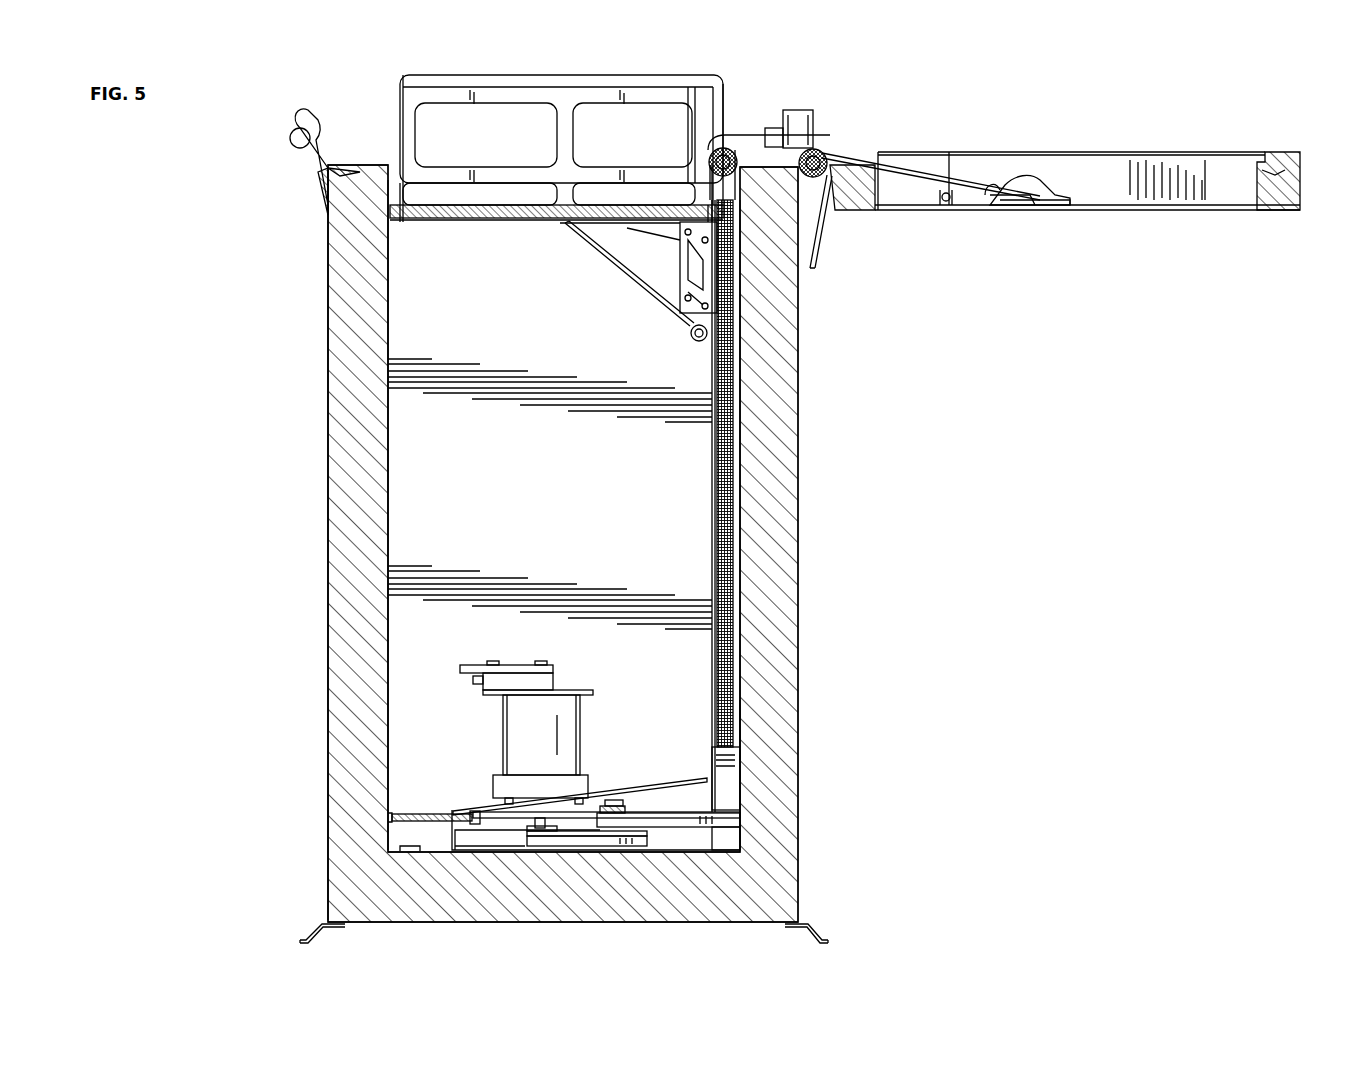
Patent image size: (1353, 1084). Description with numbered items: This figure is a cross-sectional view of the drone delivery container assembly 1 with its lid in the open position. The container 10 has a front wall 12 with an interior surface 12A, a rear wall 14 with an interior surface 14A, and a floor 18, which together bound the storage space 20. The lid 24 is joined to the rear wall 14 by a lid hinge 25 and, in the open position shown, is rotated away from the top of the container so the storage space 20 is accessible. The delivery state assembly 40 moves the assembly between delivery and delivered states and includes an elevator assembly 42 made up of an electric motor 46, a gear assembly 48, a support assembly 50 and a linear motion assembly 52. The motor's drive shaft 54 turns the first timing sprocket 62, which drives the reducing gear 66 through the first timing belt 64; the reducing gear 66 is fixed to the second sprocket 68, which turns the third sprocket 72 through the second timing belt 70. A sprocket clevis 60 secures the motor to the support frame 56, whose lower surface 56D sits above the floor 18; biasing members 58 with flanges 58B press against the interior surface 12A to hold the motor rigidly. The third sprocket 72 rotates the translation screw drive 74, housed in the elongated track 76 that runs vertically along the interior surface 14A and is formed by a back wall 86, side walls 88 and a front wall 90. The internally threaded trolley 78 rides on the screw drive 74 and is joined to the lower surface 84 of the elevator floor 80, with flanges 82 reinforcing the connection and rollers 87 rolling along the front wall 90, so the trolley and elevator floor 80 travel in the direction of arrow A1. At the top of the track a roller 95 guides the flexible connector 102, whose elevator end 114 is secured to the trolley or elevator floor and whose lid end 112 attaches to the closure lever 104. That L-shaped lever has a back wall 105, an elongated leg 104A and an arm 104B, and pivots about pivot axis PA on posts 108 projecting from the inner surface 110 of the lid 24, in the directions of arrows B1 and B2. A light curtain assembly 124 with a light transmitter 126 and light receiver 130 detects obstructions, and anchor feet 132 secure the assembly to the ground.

The drone delivery container assembly 1 is at (252, 262).
The container 10 is at (248, 312).
The front wall 12 is at (388, 503).
The interior surface of the front wall 12A is at (388, 650).
The rear wall 14 is at (798, 572).
The interior surface of the rear wall 14A is at (740, 698).
The floor 18 is at (420, 855).
The storage space 20 is at (410, 440).
The lid 24 is at (1258, 160).
The lid hinge 25 is at (813, 147).
The delivery state assembly 40 is at (1118, 118).
The elevator assembly 42 is at (448, 680).
The electric motor 46 is at (503, 732).
The gear assembly 48 is at (600, 776).
The support assembly 50 is at (415, 813).
The linear motion assembly 52 is at (684, 660).
The drive shaft 54 is at (500, 846).
The support frame 56 is at (663, 776).
The lower surface 56D is at (650, 850).
The biasing members 58 is at (400, 816).
The flange 58B is at (392, 822).
The sprocket clevis 60 is at (490, 840).
The first timing sprocket 62 is at (540, 835).
The first timing belt 64 is at (560, 840).
The reducing gear 66 is at (618, 812).
The second sprocket 68 is at (600, 847).
The second timing belt 70 is at (700, 828).
The third sprocket 72 is at (740, 808).
The translation screw drive 74 is at (733, 410).
The elongated track 76 is at (735, 445).
The trolley 78 is at (712, 291).
The elevator floor 80 is at (468, 210).
The flanges 82 is at (618, 286).
The lower surface of the elevator floor 84 is at (515, 222).
The back wall 86 is at (742, 485).
The rollers 87 is at (692, 340).
The side walls 88 is at (712, 488).
The front wall 90 is at (712, 540).
The roller 95 is at (728, 185).
The flexible connector 102 is at (840, 160).
The closure lever 104 is at (1027, 178).
The elongated leg 104A is at (1000, 192).
The arm 104B is at (949, 160).
The back wall 105 is at (1050, 205).
The posts 108 is at (946, 202).
The inner surface of the lid 110 is at (1212, 205).
The lid end 112 is at (990, 193).
The elevator end 114 is at (703, 230).
The light curtain assembly 124 is at (322, 128).
The light transmitter 126 is at (300, 136).
The light receiver 130 is at (797, 118).
The anchor feet 132 is at (310, 932).
The arrow A1 is at (490, 320).
The arrow B1 is at (1005, 130).
The arrow B2 is at (1023, 150).
The closure lever pivot axis PA is at (920, 190).